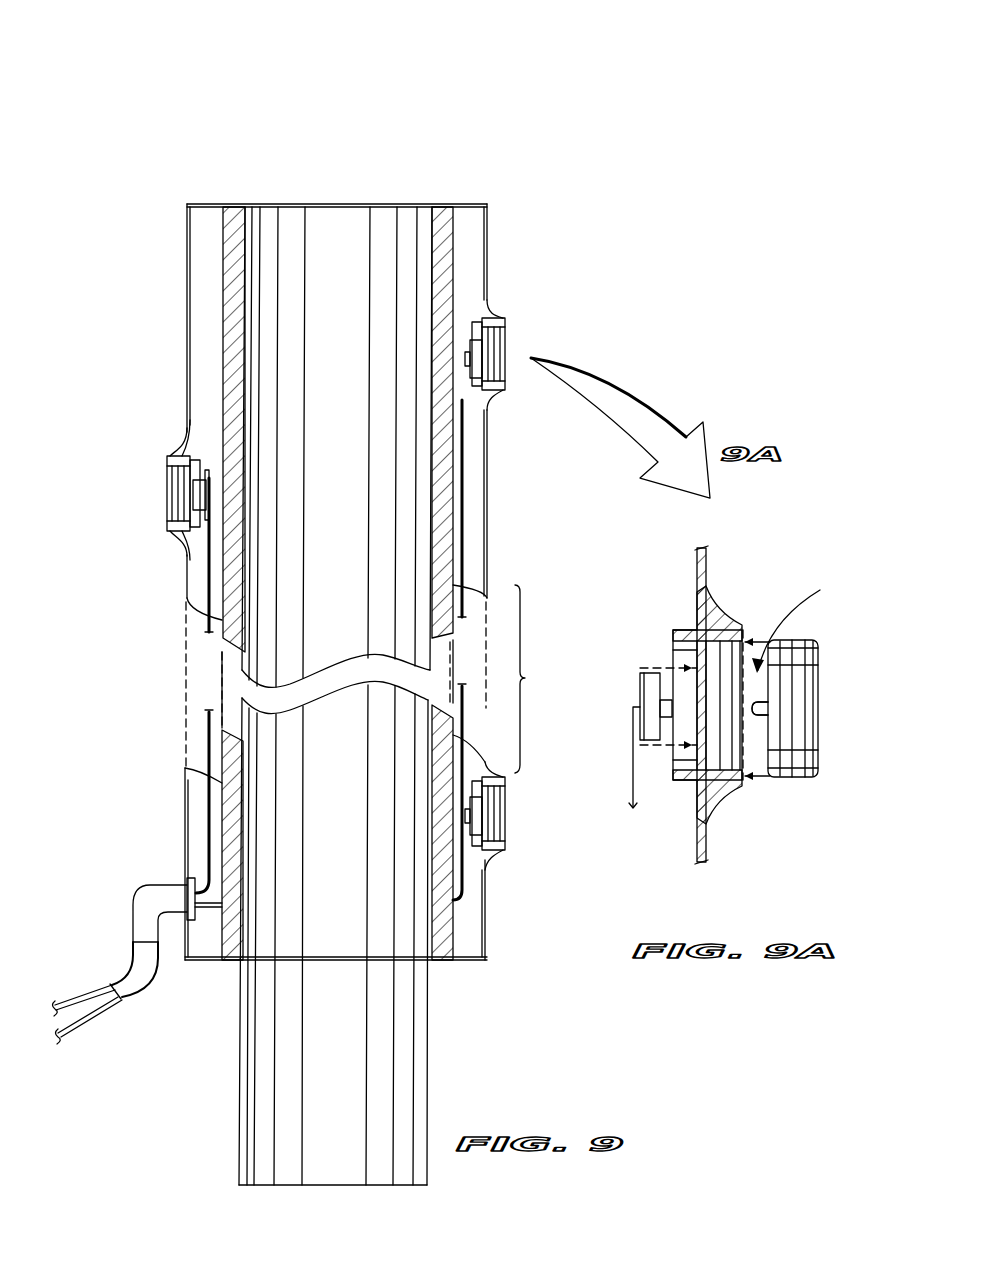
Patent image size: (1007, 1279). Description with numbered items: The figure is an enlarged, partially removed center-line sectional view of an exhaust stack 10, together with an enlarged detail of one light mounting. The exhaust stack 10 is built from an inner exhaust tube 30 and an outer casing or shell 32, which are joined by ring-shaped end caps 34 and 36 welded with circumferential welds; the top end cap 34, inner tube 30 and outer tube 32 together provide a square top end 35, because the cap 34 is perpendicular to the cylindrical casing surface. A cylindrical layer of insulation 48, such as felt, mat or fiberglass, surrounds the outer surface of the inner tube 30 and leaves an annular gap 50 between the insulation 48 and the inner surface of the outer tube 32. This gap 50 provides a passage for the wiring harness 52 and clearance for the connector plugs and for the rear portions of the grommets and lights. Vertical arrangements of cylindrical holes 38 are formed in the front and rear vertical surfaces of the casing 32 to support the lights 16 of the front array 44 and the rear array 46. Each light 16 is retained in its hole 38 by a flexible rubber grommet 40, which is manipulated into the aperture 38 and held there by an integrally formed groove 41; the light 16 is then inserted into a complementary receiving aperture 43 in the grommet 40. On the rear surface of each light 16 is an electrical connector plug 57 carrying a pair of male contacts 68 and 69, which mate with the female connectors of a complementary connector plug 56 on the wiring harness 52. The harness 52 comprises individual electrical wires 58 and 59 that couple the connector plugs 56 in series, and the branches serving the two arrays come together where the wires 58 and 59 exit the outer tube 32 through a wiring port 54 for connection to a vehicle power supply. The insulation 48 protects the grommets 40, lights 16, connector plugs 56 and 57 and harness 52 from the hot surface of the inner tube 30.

In FIG. 9, the exhaust stack 10 is at (108, 138).
In FIG. 9, the light 16 is at (170, 478).
In FIG. 9A, the light 16 is at (818, 752).
In FIG. 9, the inner exhaust tube 30 is at (410, 235).
In FIG. 9, the outer casing 32 is at (487, 487).
In FIG. 9, the top end cap 34 is at (220, 205).
In FIG. 9, the square top end 35 is at (330, 185).
In FIG. 9, the end cap 36 is at (213, 963).
In FIG. 9, the cylindrical hole 38 is at (185, 440).
In FIG. 9, the rubber grommet 40 is at (500, 315).
In FIG. 9A, the rubber grommet 40 is at (715, 625).
In FIG. 9A, the groove 41 is at (712, 628).
In FIG. 9A, the receiving aperture 43 is at (717, 775).
In FIG. 9, the front array 44 is at (525, 335).
In FIG. 9, the rear array 46 is at (128, 455).
In FIG. 9, the insulation 48 is at (440, 268).
In FIG. 9, the annular gap 50 is at (210, 262).
In FIG. 9, the wiring harness 52 is at (135, 972).
In FIG. 9, the wiring port 54 is at (150, 905).
In FIG. 9, the electrical connector plug 56 is at (205, 505).
In FIG. 9A, the electrical connector plug 56 is at (652, 675).
In FIG. 9A, the electrical connector plug 57 is at (795, 672).
In FIG. 9, the electrical wire 58 is at (215, 845).
In FIG. 9, the electrical wire 59 is at (462, 540).
In FIG. 9A, the electrical wire 59 is at (633, 765).
In FIG. 9A, the male electrical connector 68 is at (757, 716).
In FIG. 9A, the male electrical connector 69 is at (760, 708).